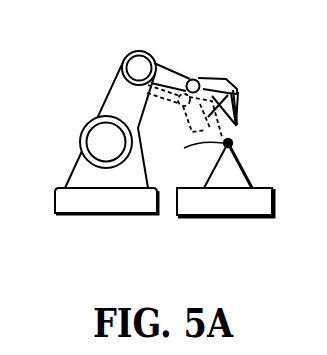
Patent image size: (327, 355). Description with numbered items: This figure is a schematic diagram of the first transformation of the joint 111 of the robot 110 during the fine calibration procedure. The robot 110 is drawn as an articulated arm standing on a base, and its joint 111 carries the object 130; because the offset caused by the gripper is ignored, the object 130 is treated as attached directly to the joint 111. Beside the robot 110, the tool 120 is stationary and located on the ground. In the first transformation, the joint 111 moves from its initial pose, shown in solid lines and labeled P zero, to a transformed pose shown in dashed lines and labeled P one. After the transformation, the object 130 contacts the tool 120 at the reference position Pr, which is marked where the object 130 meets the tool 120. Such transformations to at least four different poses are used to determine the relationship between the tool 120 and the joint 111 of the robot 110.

The robot 110 is at (122, 56).
The joint 111 is at (201, 79).
The object 130 is at (238, 110).
The tool 120 is at (242, 158).